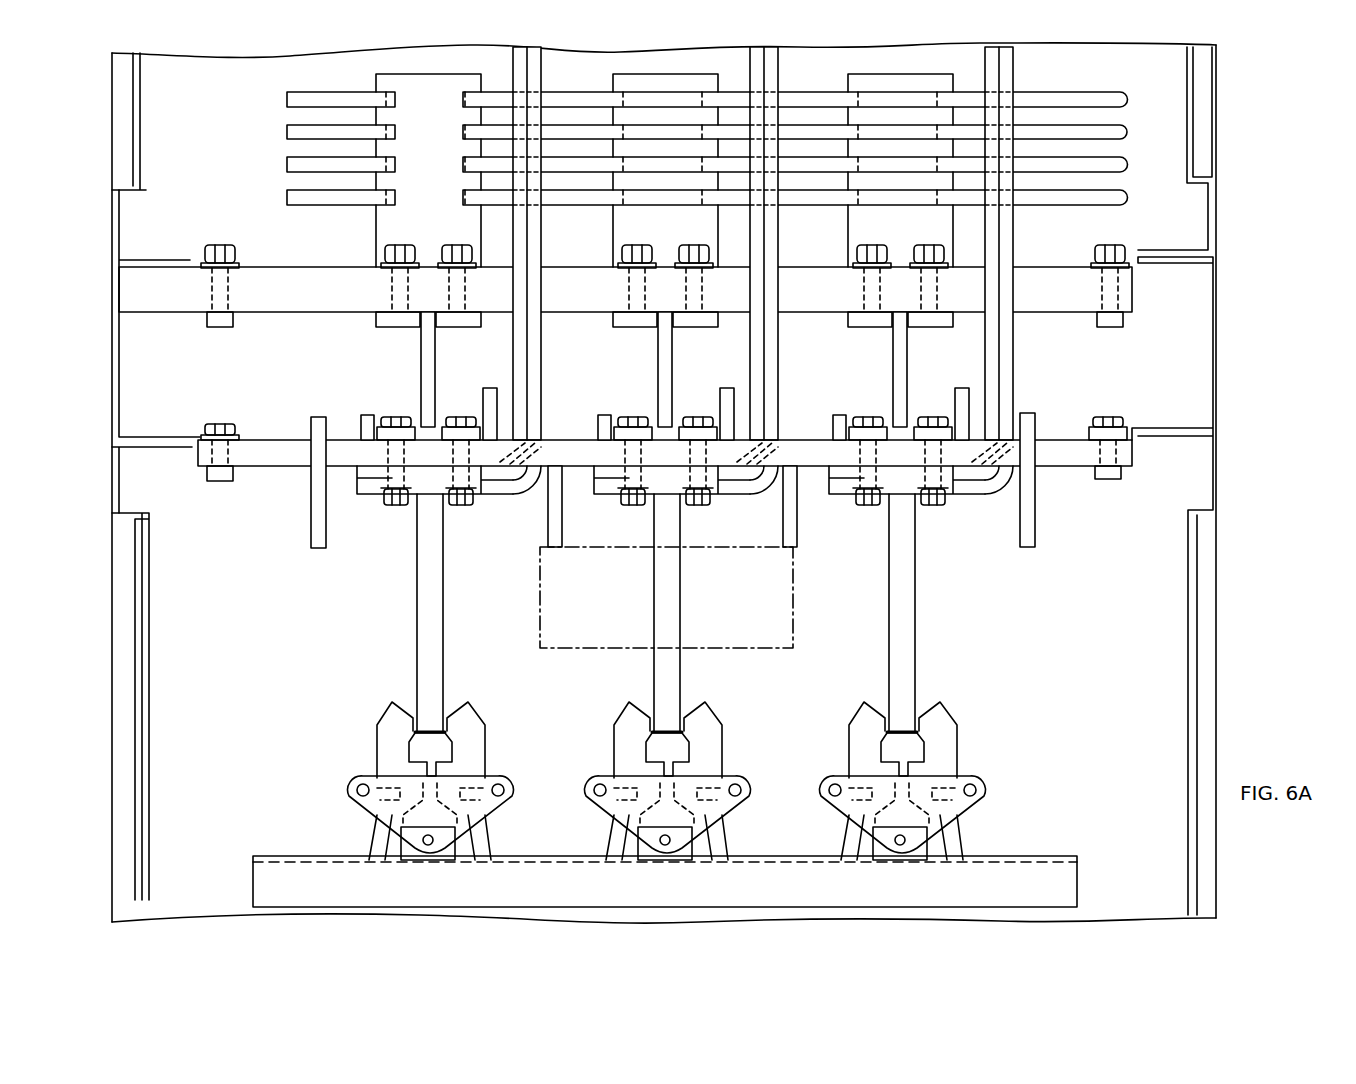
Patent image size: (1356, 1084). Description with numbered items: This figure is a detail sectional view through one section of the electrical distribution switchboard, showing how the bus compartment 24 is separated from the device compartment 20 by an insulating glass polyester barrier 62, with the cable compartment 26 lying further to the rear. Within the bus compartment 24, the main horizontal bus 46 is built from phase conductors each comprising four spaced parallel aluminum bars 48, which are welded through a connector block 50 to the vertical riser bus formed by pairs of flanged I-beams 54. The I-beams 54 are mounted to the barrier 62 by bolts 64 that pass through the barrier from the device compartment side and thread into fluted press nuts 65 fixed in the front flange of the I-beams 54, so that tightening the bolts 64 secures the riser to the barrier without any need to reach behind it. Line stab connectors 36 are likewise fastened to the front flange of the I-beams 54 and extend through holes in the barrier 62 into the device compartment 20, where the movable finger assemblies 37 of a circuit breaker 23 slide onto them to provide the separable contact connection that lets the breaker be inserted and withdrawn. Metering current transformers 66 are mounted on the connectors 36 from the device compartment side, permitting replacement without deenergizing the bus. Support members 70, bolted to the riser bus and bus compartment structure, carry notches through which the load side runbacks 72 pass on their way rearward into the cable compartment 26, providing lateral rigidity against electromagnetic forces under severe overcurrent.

The device compartment 20 is at (157, 654).
The circuit breaker 23 is at (275, 884).
The bus compartment 24 is at (143, 361).
The cable compartment 26 is at (131, 212).
The line stab connector 36 is at (417, 622).
The finger assembly 37 is at (485, 772).
The main horizontal bus 46 is at (226, 169).
The aluminum bars 48 is at (290, 196).
The connector block 50 is at (377, 76).
The I-beam 54 is at (438, 356).
The insulating glass polyester barrier 62 is at (295, 470).
The bolt 64 is at (395, 506).
The fluted press nut 65 is at (395, 416).
The metering current transformer 66 is at (555, 650).
The support member 70 is at (557, 266).
The load side runback 72 is at (542, 385).